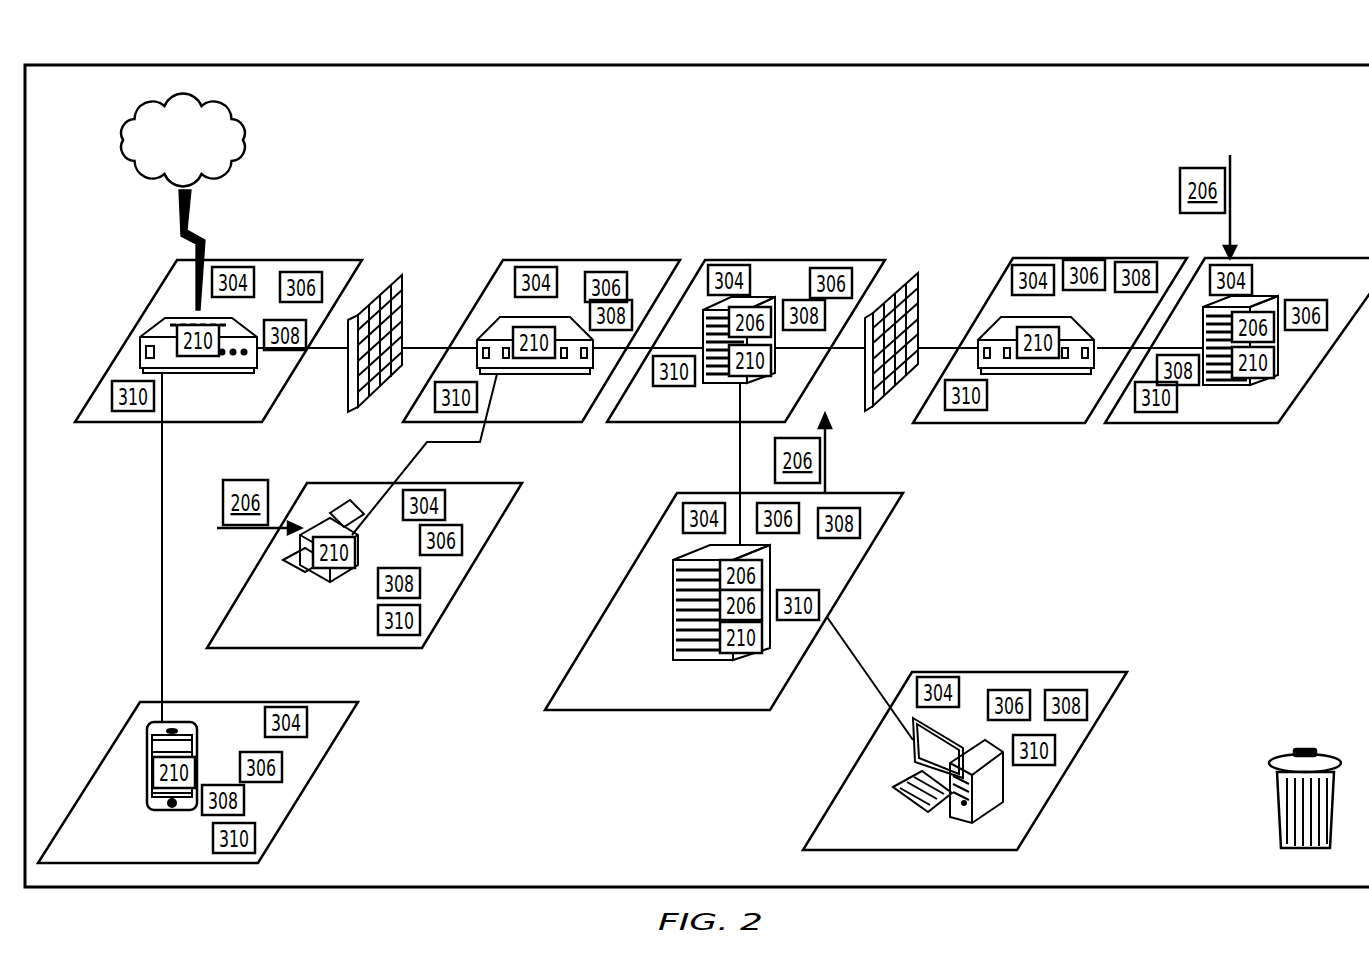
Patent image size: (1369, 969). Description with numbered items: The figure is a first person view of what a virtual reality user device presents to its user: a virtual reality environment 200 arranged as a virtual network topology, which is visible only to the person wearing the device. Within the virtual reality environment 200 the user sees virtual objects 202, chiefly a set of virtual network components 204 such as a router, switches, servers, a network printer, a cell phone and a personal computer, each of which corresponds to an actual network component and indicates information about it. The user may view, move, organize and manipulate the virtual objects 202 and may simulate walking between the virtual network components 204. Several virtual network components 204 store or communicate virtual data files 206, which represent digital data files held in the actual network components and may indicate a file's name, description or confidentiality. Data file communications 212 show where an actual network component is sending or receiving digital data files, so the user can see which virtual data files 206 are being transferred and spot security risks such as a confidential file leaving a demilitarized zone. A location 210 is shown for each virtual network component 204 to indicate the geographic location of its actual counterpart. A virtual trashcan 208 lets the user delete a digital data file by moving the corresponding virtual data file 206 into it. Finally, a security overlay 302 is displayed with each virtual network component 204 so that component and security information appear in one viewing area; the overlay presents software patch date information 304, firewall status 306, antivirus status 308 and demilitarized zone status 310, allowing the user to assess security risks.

The virtual reality environment 200 is at (163, 33).
The virtual objects 202 is at (1287, 65).
The virtual network component 204 is at (245, 327).
The virtual data file 206 is at (748, 394).
The virtual trashcan 208 is at (1275, 788).
The location 210 is at (713, 556).
The data file communications 212 is at (1232, 180).
The security overlay 302 is at (292, 260).
The software patch date information 304 is at (732, 501).
The firewall status 306 is at (783, 521).
The antivirus status 308 is at (700, 538).
The demilitarized zone status 310 is at (644, 604).